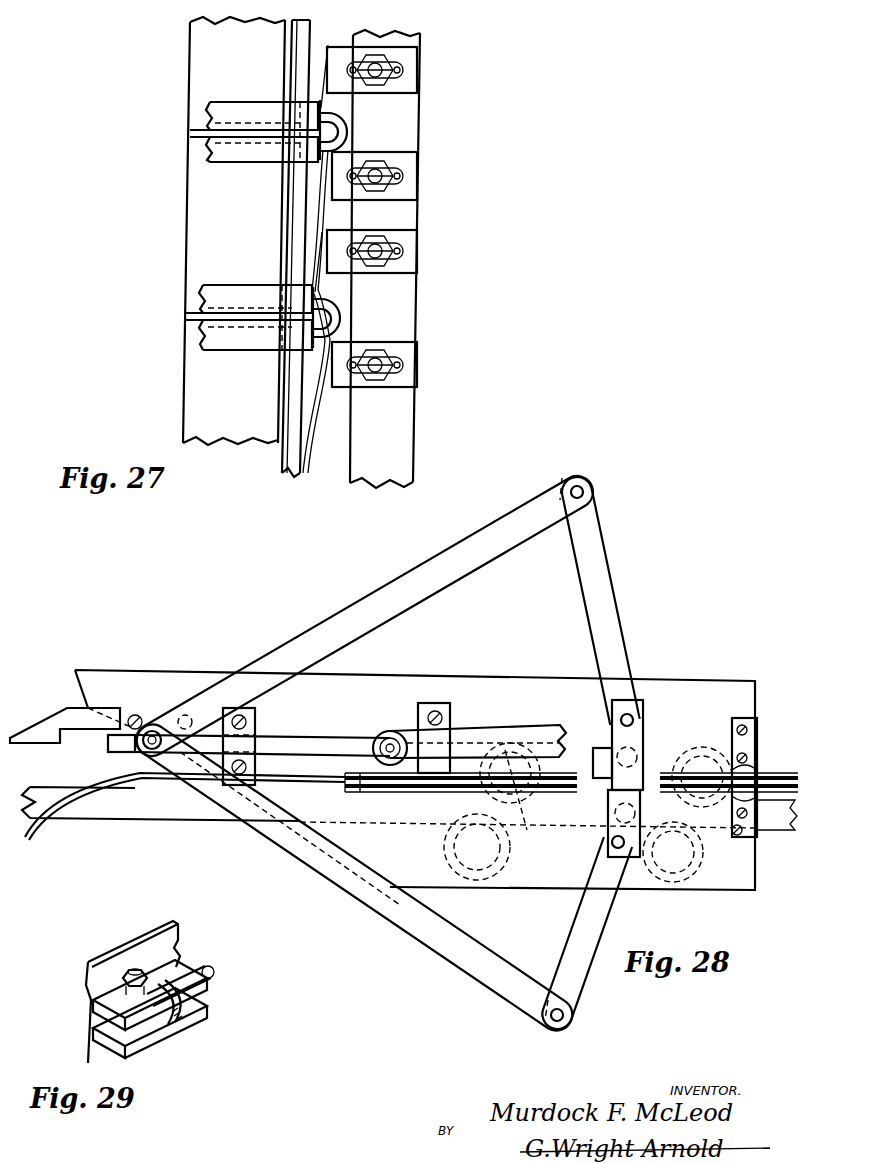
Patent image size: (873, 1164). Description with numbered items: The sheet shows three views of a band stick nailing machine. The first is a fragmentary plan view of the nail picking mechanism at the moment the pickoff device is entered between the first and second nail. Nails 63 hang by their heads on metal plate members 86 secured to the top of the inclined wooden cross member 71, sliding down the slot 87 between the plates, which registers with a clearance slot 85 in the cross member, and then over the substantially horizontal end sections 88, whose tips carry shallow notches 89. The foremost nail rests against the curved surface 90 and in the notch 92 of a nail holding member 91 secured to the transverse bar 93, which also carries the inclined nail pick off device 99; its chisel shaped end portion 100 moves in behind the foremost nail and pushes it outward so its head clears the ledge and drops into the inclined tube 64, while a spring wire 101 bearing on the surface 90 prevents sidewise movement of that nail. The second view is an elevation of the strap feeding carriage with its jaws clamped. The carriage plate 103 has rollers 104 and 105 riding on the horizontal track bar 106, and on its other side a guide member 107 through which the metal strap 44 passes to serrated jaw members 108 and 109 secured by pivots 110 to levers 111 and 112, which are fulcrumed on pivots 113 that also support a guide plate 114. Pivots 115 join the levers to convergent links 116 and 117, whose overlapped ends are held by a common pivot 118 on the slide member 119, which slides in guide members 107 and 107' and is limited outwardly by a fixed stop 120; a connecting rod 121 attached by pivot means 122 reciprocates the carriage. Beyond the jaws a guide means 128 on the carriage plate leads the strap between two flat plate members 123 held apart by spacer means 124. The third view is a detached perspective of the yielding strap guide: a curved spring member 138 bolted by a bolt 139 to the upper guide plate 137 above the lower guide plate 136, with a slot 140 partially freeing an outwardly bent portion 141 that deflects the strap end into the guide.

In FIG. 28, the metal strap 44 is at (32, 816).
In FIG. 27, the nail 63 is at (335, 318).
In FIG. 27, the inclined tube 64 is at (345, 128).
In FIG. 27, the cross member 71 is at (194, 415).
In FIG. 27, the slot 85 is at (200, 136).
In FIG. 27, the metal plate member 86 is at (258, 135).
In FIG. 27, the slot 87 is at (226, 128).
In FIG. 27, the end section 88 is at (303, 150).
In FIG. 27, the notch 89 is at (300, 115).
In FIG. 27, the curved surface 90 is at (318, 193).
In FIG. 27, the nail holding member 91 is at (401, 163).
In FIG. 27, the notch 92 is at (338, 172).
In FIG. 27, the transverse bar 93 is at (398, 452).
In FIG. 27, the nail pick off device 99 is at (418, 78).
In FIG. 27, the chisel shaped end portion 100 is at (320, 100).
In FIG. 27, the spring wire 101 is at (314, 207).
In FIG. 28, the carriage plate 103 is at (384, 682).
In FIG. 28, the roller 104 is at (690, 848).
In FIG. 28, the roller 105 is at (502, 847).
In FIG. 28, the track bar 106 is at (160, 818).
In FIG. 28, the guide member 107 is at (263, 742).
In FIG. 28, the guide member 107' is at (455, 709).
In FIG. 28, the jaw member 108 is at (650, 772).
In FIG. 28, the jaw member 109 is at (650, 826).
In FIG. 28, the pivot 110 is at (612, 746).
In FIG. 28, the lever 111 is at (596, 612).
In FIG. 28, the lever 112 is at (580, 916).
In FIG. 28, the pivot 113 is at (630, 716).
In FIG. 28, the guide plate 114 is at (646, 716).
In FIG. 28, the pivot 115 is at (573, 500).
In FIG. 28, the link 116 is at (337, 628).
In FIG. 28, the link 117 is at (450, 936).
In FIG. 28, the common pivot 118 is at (151, 731).
In FIG. 28, the slide member 119 is at (116, 746).
In FIG. 28, the fixed stop 120 is at (58, 734).
In FIG. 28, the connecting rod 121 is at (530, 730).
In FIG. 28, the pivot means 122 is at (388, 744).
In FIG. 28, the plate member 123 is at (405, 780).
In FIG. 28, the spacer means 124 is at (360, 790).
In FIG. 28, the guide means 128 is at (752, 720).
In FIG. 29, the guide plate 136 is at (90, 1050).
In FIG. 29, the guide plate 137 is at (140, 946).
In FIG. 29, the spring member 138 is at (172, 985).
In FIG. 29, the bolt 139 is at (128, 976).
In FIG. 29, the slot 140 is at (204, 984).
In FIG. 29, the outwardly bent portion 141 is at (172, 1026).